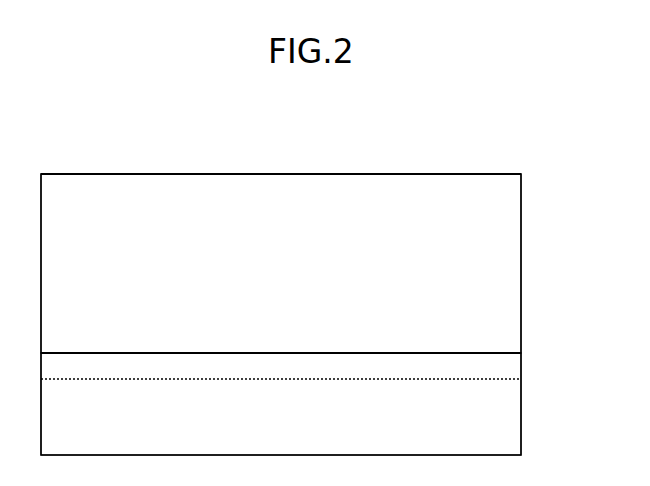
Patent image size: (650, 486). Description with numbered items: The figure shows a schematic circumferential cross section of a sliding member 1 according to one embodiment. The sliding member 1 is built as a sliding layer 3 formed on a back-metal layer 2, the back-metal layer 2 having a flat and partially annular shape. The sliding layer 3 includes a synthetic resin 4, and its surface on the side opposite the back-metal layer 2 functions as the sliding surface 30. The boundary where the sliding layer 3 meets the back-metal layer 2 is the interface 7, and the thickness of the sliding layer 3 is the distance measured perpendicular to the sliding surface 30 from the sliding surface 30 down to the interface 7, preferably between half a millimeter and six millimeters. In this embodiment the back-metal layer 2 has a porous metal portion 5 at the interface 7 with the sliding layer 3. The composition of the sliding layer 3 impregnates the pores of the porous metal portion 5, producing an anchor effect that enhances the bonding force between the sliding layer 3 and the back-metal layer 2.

The sliding member 1 is at (536, 170).
The back-metal layer 2 is at (522, 416).
The sliding layer 3 is at (522, 280).
The synthetic resin 4 is at (81, 200).
The porous metal portion 5 is at (508, 368).
The interface 7 is at (445, 351).
The sliding surface 30 is at (232, 174).